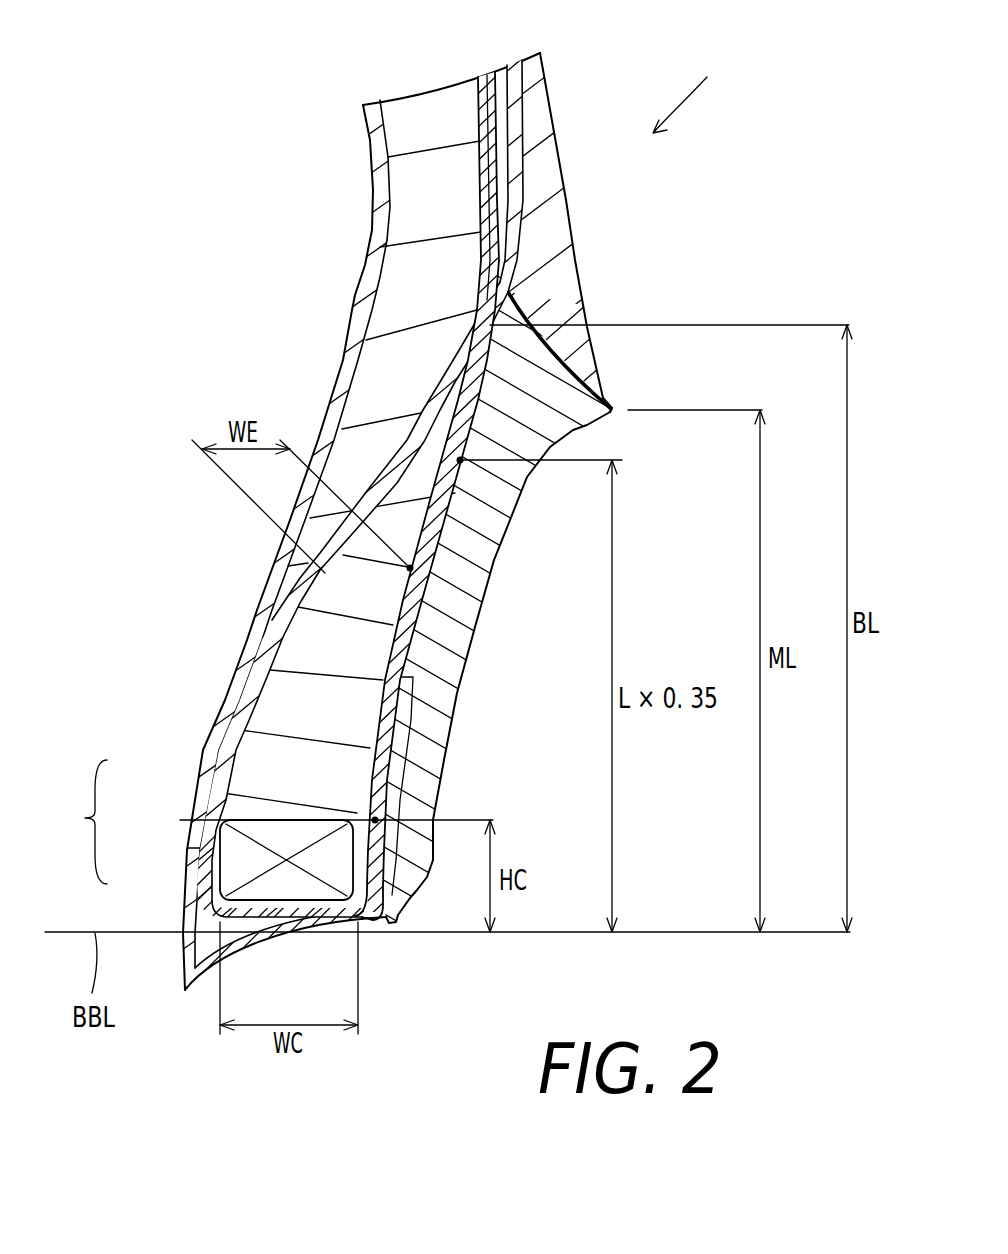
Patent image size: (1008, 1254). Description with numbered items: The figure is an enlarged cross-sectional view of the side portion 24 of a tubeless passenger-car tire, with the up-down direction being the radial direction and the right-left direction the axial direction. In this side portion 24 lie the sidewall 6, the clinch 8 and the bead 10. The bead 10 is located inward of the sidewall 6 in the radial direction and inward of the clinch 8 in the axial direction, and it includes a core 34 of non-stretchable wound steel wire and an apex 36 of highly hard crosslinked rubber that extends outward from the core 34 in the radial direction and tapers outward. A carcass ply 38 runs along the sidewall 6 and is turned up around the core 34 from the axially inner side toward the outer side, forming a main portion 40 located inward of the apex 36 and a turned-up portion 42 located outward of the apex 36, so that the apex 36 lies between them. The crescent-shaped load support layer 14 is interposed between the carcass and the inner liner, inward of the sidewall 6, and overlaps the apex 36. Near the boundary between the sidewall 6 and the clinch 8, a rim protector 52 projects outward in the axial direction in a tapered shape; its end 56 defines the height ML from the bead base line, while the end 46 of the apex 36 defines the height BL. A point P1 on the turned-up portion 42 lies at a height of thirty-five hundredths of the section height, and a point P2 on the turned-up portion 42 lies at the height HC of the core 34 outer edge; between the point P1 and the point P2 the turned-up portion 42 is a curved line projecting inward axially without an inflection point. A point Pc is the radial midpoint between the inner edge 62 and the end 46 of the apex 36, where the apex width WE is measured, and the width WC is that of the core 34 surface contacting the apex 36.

The sidewall 6 is at (540, 103).
The clinch 8 is at (457, 645).
The bead 10 is at (78, 822).
The load support layer 14 is at (403, 143).
The side portion 24 is at (697, 97).
The core 34 is at (233, 865).
The apex 36 is at (237, 763).
The carcass ply 38 is at (490, 110).
The main portion 40 is at (440, 383).
The turned-up portion 42 is at (540, 173).
The end of the apex 46 is at (475, 312).
The rim protector 52 is at (553, 370).
The end of the rim protector 56 is at (613, 413).
The inner edge of the apex 62 is at (287, 818).
The point P1 is at (470, 462).
The point Pc is at (417, 562).
The point P2 is at (380, 817).